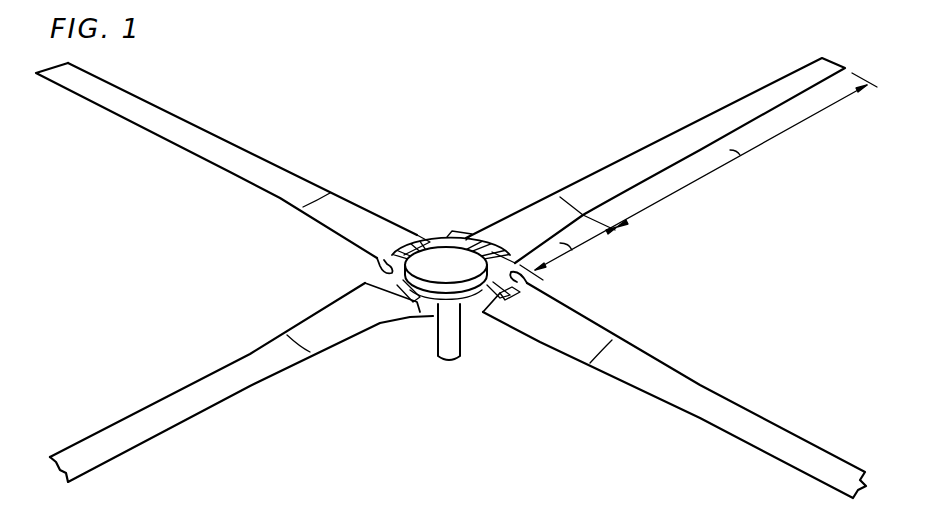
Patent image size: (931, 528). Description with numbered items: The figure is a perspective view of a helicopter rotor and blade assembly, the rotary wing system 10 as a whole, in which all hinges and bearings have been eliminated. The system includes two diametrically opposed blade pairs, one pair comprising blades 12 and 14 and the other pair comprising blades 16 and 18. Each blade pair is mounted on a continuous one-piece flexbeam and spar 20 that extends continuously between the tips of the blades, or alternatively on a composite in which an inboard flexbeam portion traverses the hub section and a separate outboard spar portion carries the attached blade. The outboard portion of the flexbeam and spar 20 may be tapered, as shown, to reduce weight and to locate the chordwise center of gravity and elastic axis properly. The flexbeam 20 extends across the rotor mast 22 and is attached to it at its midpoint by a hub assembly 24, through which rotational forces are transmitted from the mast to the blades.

The rotary wing system 10 is at (481, 176).
The blade 12 is at (243, 352).
The blade 14 is at (656, 146).
The blade 16 is at (233, 142).
The blade 18 is at (662, 370).
The flexbeam and spar 20 is at (505, 297).
The rotor mast 22 is at (438, 348).
The hub assembly 24 is at (438, 248).